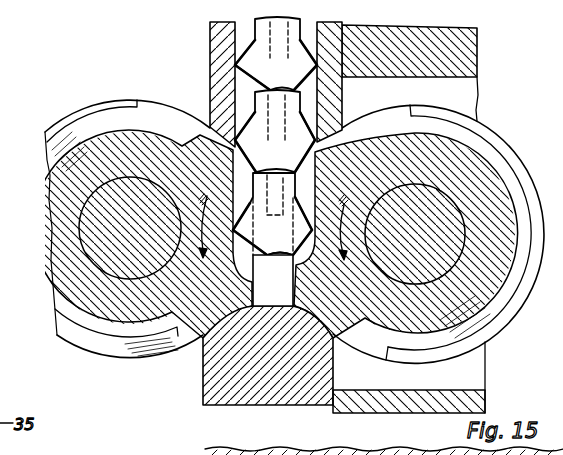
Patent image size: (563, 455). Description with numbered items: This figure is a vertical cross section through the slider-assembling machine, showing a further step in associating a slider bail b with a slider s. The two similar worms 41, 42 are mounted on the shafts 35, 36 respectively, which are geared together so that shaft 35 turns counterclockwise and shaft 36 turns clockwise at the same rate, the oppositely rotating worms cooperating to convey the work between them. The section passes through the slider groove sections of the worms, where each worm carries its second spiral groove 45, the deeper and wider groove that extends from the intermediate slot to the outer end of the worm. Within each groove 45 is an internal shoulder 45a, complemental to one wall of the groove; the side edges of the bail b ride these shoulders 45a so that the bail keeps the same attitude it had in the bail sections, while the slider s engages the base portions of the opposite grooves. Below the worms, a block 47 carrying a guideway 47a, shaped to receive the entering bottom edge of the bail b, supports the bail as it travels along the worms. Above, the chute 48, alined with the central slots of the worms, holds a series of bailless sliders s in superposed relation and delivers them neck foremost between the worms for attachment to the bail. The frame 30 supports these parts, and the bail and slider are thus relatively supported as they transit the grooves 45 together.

The frame 30 is at (456, 62).
The shaft 35 is at (452, 215).
The shaft 36 is at (106, 222).
The worm 41 is at (386, 334).
The worm 42 is at (73, 280).
The spiral groove 45 is at (105, 341).
The internal shoulder 45a is at (484, 349).
The block 47 is at (214, 378).
The guideway 47a is at (273, 280).
The chute 48 is at (214, 49).
The slider s is at (251, 204).
The slider bail b is at (275, 261).